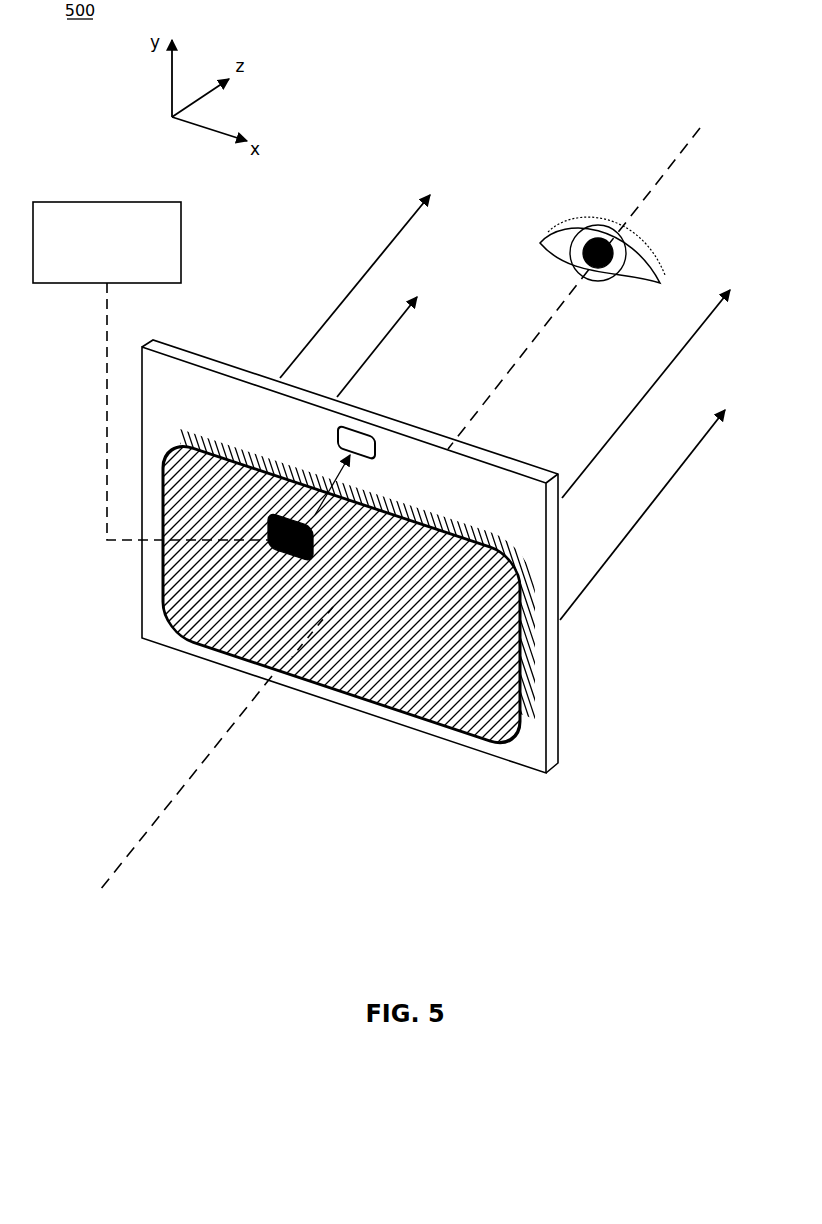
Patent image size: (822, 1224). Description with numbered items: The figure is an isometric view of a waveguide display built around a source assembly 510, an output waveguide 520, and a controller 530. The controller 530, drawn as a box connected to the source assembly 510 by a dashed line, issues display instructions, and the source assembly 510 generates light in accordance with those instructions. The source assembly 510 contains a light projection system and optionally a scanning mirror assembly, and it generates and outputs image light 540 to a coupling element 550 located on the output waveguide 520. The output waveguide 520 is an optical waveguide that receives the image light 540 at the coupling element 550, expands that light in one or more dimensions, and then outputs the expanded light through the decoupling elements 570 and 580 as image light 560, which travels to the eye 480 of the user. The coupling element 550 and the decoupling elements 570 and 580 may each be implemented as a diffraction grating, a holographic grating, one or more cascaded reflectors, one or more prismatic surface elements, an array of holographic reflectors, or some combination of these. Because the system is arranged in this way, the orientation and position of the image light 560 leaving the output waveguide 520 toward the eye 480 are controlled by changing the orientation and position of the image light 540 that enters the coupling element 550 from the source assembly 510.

The source assembly 510 is at (315, 545).
The output waveguide 520 is at (558, 643).
The controller 530 is at (150, 371).
The image light 540 is at (378, 458).
The coupling element 550 is at (337, 427).
The image light 560 is at (370, 262).
The decoupling element 570 is at (228, 638).
The decoupling element 580 is at (535, 670).
The eye 480 is at (602, 220).